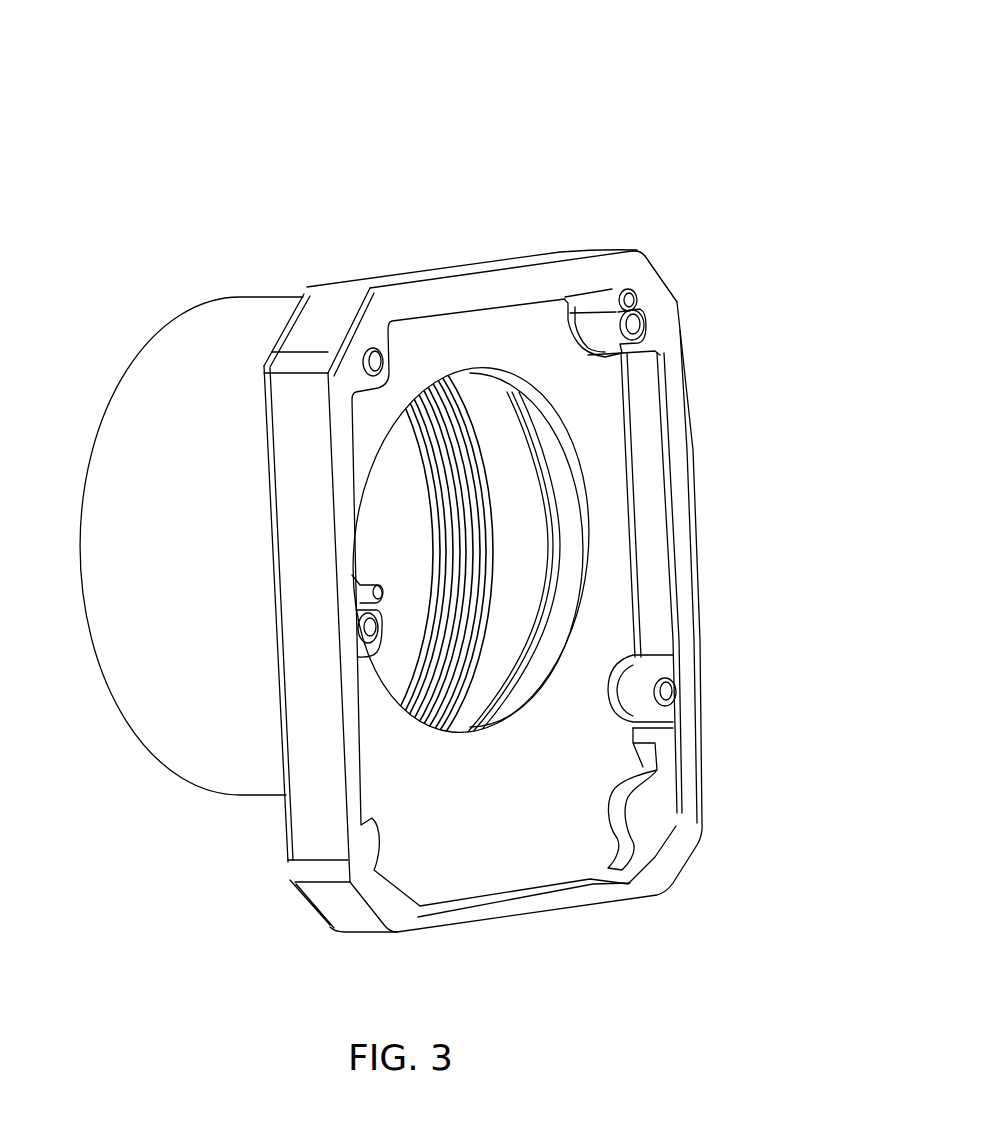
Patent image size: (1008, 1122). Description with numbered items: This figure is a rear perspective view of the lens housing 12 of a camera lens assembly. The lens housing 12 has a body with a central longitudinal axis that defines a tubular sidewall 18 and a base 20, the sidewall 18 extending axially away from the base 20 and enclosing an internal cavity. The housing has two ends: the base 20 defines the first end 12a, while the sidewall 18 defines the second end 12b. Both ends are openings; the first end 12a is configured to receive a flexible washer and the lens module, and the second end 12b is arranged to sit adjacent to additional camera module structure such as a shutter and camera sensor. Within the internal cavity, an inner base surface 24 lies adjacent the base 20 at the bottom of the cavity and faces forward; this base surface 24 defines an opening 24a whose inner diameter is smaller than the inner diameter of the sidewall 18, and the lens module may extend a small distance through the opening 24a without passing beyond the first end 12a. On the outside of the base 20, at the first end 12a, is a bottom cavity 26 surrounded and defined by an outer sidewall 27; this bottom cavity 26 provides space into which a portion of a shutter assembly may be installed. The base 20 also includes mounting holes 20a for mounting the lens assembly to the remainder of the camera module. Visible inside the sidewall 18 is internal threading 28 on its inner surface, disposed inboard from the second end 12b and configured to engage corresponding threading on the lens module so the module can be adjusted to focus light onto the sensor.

The lens housing 12 is at (588, 102).
The first end 12a is at (640, 258).
The second end 12b is at (143, 350).
The tubular sidewall 18 is at (232, 322).
The base 20 is at (472, 275).
The mounting holes 20a is at (373, 348).
The inner base surface 24 is at (493, 390).
The opening 24a is at (577, 580).
The bottom cavity 26 is at (560, 827).
The outer sidewall 27 is at (687, 612).
The internal threading 28 is at (473, 530).